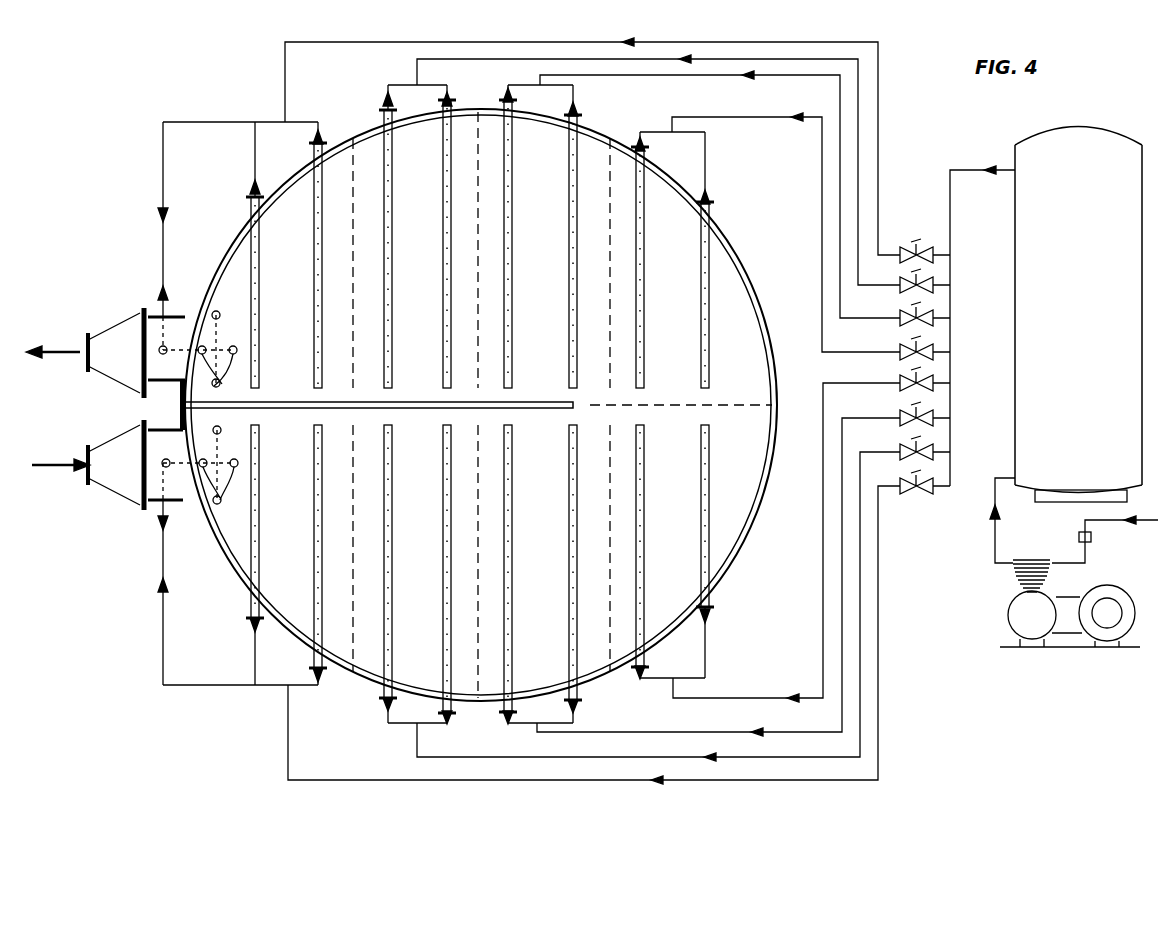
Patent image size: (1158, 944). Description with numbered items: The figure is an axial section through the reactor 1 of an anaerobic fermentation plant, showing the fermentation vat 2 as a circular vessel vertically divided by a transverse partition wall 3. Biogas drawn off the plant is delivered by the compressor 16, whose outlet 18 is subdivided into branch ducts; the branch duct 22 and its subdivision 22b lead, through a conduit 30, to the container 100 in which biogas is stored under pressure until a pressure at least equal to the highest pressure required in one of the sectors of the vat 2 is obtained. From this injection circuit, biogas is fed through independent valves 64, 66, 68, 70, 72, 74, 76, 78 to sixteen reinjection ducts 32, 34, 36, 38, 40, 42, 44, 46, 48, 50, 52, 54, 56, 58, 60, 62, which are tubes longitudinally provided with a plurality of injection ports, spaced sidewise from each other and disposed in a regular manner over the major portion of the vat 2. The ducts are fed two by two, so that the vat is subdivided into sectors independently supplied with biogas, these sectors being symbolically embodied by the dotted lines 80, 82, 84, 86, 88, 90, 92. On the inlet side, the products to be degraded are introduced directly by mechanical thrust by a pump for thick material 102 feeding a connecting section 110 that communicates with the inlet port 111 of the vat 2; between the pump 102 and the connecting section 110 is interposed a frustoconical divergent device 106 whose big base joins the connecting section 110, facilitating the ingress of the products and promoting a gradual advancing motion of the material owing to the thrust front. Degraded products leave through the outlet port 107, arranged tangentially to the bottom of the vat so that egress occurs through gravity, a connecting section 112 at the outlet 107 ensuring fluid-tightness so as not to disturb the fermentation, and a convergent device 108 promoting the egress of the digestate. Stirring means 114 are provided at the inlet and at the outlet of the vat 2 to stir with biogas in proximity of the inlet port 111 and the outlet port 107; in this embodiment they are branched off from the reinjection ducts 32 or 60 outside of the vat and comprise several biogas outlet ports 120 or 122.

The reactor 1 is at (740, 250).
The anaerobic fermentation vat 2 is at (745, 470).
The transverse partition wall 3 is at (180, 406).
The compressor 16 is at (1043, 625).
The outlet of the compressor 18 is at (1005, 566).
The branch duct 22 is at (992, 538).
The subdivision of the duct 22b is at (990, 494).
The conduit 30 is at (946, 196).
The duct 32 is at (246, 560).
The duct 34 is at (327, 664).
The duct 36 is at (381, 690).
The duct 38 is at (452, 708).
The duct 40 is at (513, 676).
The duct 42 is at (579, 668).
The duct 44 is at (648, 640).
The duct 46 is at (712, 604).
The duct 48 is at (710, 292).
The duct 50 is at (645, 276).
The duct 52 is at (578, 291).
The duct 54 is at (513, 290).
The duct 56 is at (452, 297).
The duct 58 is at (393, 282).
The duct 60 is at (325, 297).
The duct 62 is at (262, 316).
The independent valve 64 is at (916, 494).
The independent valve 66 is at (938, 453).
The independent valve 68 is at (938, 419).
The independent valve 70 is at (938, 384).
The independent valve 72 is at (938, 353).
The independent valve 74 is at (938, 319).
The independent valve 76 is at (938, 286).
The independent valve 78 is at (938, 256).
The dotted line 80 is at (355, 495).
The dotted line 82 is at (474, 540).
The dotted line 84 is at (607, 540).
The dotted line 86 is at (720, 405).
The dotted line 88 is at (608, 300).
The dotted line 90 is at (480, 315).
The dotted line 92 is at (356, 353).
The container 100 is at (1078, 315).
The pump for thick material 102 is at (61, 479).
The divergent device 106 is at (122, 478).
The outlet port 107 is at (168, 278).
The convergent device 108 is at (118, 336).
The connecting section 110 is at (160, 505).
The inlet port 111 is at (160, 570).
The connecting section 112 is at (160, 300).
The stirring means 114 is at (214, 310).
The biogas outlet port 120 is at (230, 500).
The biogas outlet port 122 is at (231, 373).